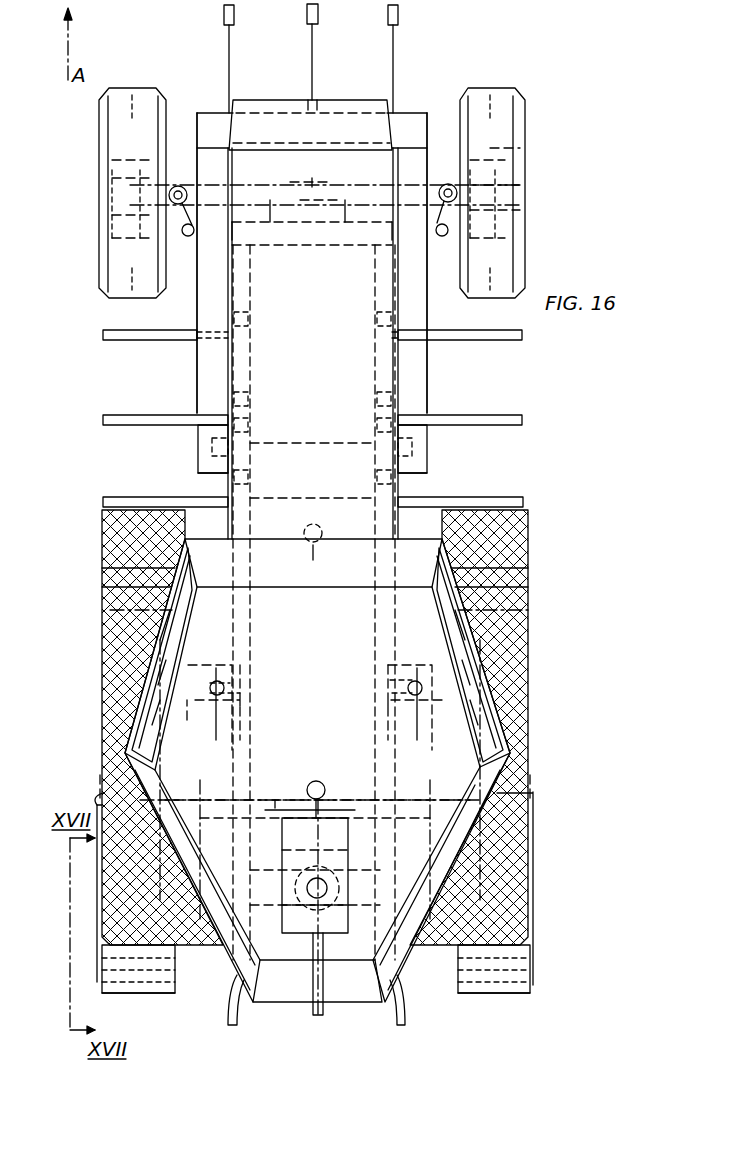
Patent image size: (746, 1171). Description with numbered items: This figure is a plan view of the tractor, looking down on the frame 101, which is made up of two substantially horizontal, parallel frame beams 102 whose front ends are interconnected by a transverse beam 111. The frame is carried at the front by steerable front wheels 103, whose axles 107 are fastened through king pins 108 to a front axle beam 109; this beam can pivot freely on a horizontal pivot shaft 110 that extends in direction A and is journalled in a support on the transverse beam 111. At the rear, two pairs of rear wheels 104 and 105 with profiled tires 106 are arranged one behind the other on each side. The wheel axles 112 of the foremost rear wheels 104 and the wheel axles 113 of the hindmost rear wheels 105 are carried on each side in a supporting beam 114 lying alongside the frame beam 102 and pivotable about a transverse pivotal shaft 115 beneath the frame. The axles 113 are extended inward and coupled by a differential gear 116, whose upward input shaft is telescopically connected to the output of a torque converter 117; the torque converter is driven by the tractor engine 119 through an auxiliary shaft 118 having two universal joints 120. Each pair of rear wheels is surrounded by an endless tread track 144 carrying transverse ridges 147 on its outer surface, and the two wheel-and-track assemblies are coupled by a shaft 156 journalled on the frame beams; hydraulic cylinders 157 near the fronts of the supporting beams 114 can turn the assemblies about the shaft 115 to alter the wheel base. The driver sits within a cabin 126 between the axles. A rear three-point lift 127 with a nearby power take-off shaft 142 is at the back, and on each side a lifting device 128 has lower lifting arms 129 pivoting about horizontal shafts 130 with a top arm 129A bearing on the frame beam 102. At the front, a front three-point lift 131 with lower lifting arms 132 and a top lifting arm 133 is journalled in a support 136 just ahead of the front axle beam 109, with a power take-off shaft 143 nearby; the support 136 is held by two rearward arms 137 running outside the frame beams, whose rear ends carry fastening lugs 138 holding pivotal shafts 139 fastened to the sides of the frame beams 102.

The frame 101 is at (232, 638).
The frame beams 102 is at (248, 642).
The front wheels 103 is at (143, 88).
The foremost rear wheels 104 is at (96, 618).
The hindmost rear wheels 105 is at (91, 913).
The tires 106 is at (89, 788).
The axles 107 is at (113, 195).
The king pins 108 is at (184, 185).
The front axle beam 109 is at (260, 184).
The pivot shaft 110 is at (320, 164).
The transverse beam 111 is at (310, 246).
The wheel axles 112 is at (186, 708).
The wheel axles 113 is at (118, 882).
The supporting beam 114 is at (216, 662).
The pivotal shaft 115 is at (286, 794).
The differential gear 116 is at (334, 862).
The torque converter 117 is at (320, 783).
The auxiliary shaft 118 is at (358, 660).
The tractor engine 119 is at (378, 300).
The universal joints 120 is at (305, 530).
The cabin 126 is at (347, 542).
The three-point lift 127 is at (265, 1042).
The lifting device 128 is at (136, 447).
The lower lifting arms 129 is at (102, 336).
The top arm 129A is at (102, 414).
The horizontal shafts 130 is at (246, 314).
The front three-point lift 131 is at (278, 22).
The lower lifting arms 132 is at (228, 51).
The top lifting arm 133 is at (313, 45).
The support 136 is at (422, 109).
The arms 137 is at (205, 292).
The fastening lugs 138 is at (198, 468).
The pivotal shafts 139 is at (208, 448).
The power take-off shaft 142 is at (322, 940).
The power take-off shaft 143 is at (318, 96).
The endless tread track 144 is at (94, 989).
The transverse ridges 147 is at (155, 997).
The shaft 156 is at (346, 772).
The hydraulic cylinders 157 is at (226, 689).